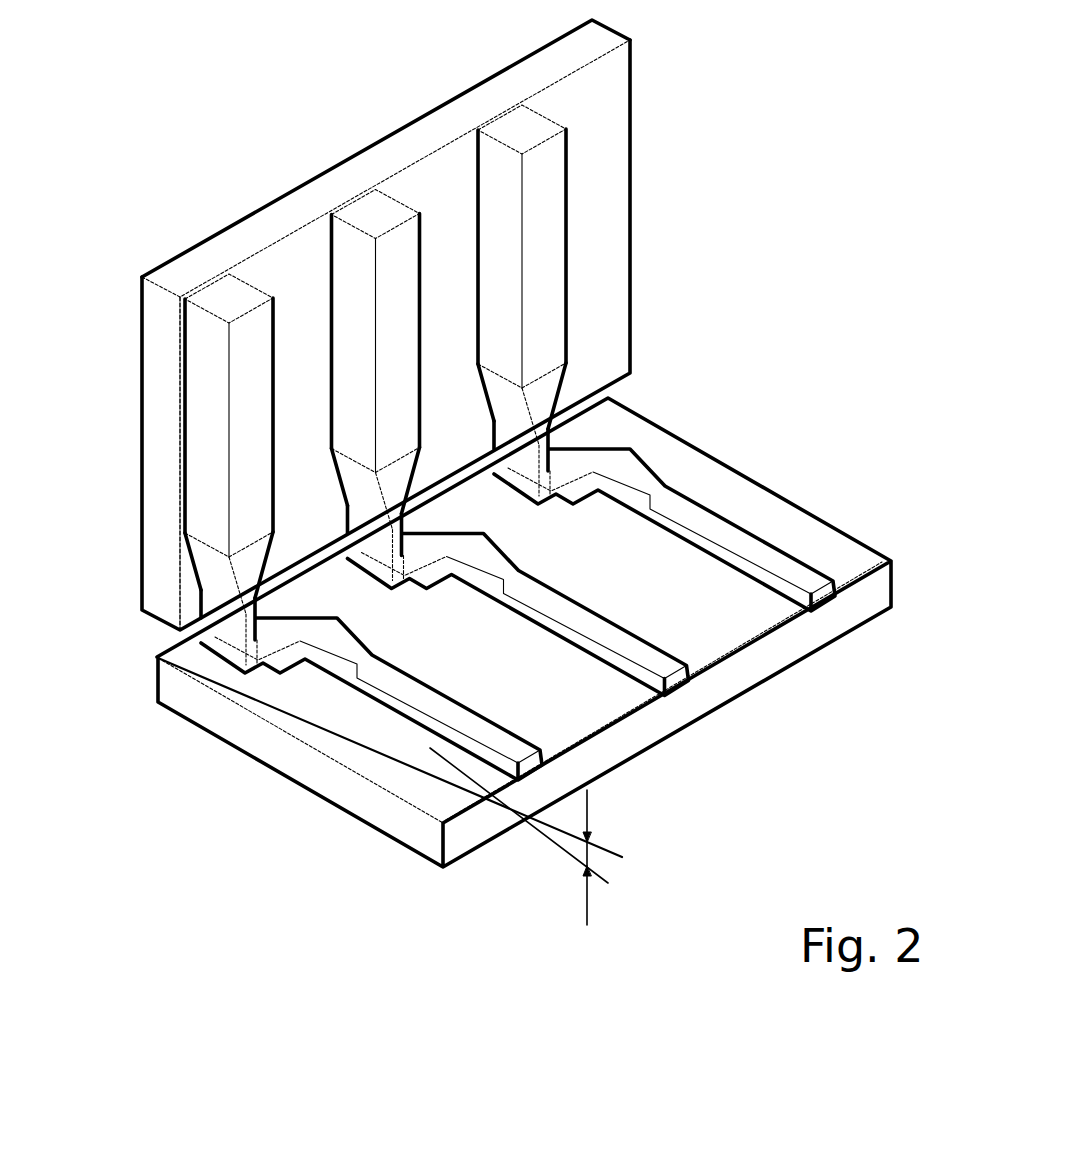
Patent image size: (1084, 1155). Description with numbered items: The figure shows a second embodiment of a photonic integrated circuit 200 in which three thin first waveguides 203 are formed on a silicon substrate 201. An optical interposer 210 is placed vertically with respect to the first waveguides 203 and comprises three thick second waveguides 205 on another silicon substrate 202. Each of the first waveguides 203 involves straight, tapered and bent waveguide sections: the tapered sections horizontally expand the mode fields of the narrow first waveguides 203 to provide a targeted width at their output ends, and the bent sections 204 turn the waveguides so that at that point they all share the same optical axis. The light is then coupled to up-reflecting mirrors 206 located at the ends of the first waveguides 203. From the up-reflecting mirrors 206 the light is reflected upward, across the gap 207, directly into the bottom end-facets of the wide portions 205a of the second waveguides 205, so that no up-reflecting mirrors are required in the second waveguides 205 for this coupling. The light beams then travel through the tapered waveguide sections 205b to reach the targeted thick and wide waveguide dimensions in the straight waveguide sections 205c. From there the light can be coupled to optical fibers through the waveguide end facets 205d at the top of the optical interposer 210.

The photonic integrated circuit 200 is at (803, 487).
The silicon substrate 201 is at (343, 757).
The silicon substrate 202 is at (448, 315).
The first waveguides 203 is at (518, 580).
The bent sections 204 is at (580, 450).
The second waveguides 205 is at (402, 359).
The wide portions 205a is at (392, 556).
The tapered waveguide sections 205b is at (533, 543).
The straight waveguide sections 205c is at (360, 362).
The waveguide end facets 205d is at (520, 128).
The up-reflecting mirrors 206 is at (238, 673).
The gap 207 is at (588, 857).
The optical interposer 210 is at (548, 37).